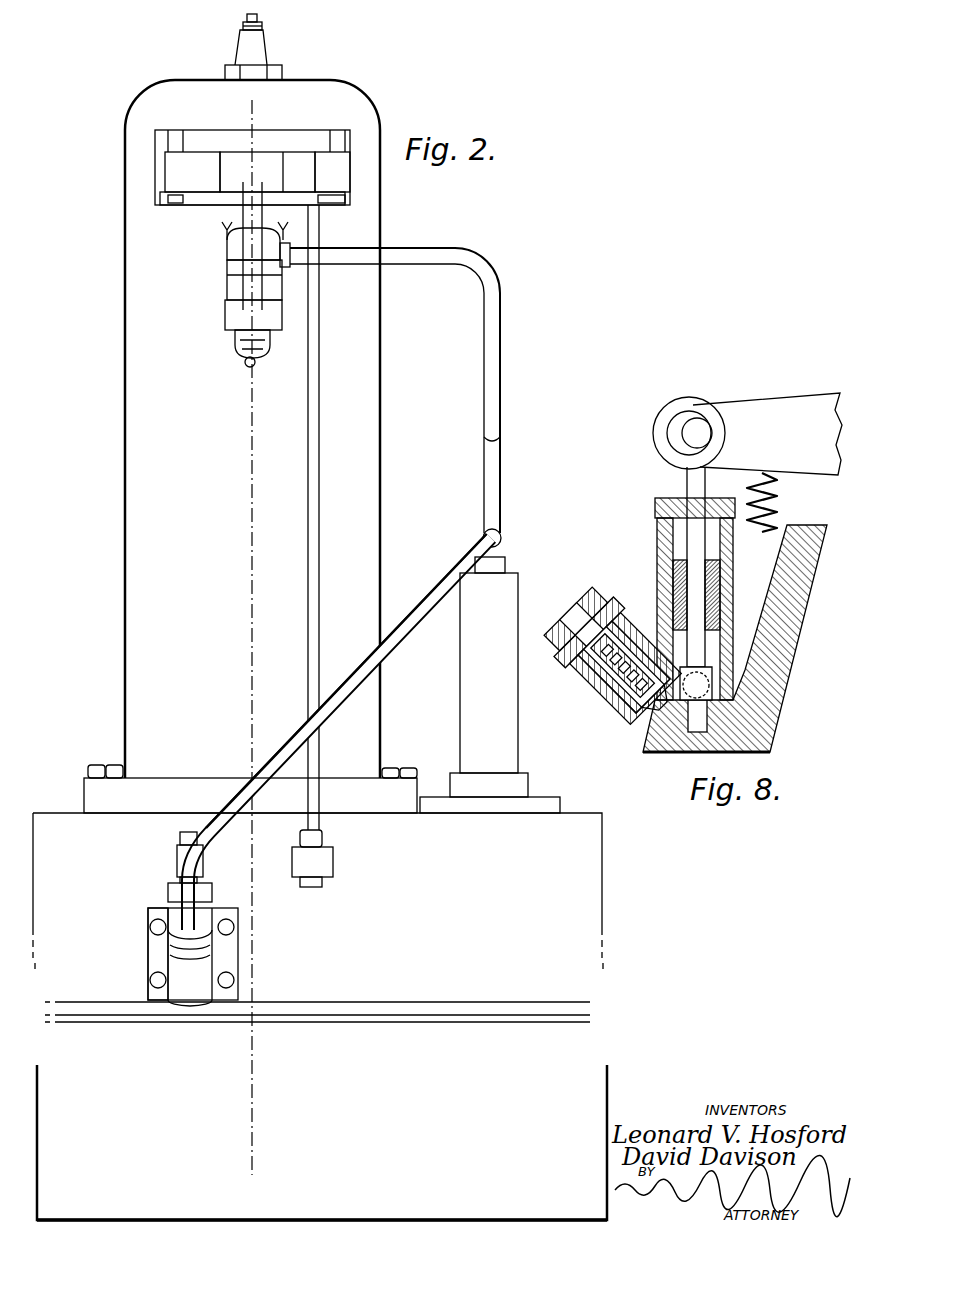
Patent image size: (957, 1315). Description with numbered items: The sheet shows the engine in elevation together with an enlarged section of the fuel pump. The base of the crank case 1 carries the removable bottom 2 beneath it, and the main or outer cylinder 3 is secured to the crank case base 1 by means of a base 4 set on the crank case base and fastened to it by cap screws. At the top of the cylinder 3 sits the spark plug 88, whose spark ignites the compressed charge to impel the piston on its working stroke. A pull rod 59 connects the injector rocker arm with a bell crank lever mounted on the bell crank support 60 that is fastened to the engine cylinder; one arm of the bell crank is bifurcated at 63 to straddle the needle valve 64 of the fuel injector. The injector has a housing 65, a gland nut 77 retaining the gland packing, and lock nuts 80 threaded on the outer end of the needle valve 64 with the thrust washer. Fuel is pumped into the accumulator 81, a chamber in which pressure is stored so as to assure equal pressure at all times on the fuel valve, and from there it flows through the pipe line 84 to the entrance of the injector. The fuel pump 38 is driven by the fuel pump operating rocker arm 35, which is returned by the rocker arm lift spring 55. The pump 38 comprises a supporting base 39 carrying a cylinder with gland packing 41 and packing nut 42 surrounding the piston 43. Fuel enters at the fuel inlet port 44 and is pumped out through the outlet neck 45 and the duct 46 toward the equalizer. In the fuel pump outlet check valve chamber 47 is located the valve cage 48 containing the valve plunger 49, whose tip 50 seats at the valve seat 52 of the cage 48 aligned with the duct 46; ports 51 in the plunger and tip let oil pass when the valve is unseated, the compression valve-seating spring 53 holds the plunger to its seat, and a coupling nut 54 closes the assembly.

In FIG. 2, the base of the crank case 1 is at (320, 1016).
In FIG. 2, the removable bottom 2 is at (294, 1131).
In FIG. 2, the main or outer cylinder 3 is at (252, 643).
In FIG. 2, the base 4 is at (222, 773).
In FIG. 2, the fuel pump operating rocker arm 35 is at (177, 855).
In FIG. 8, the fuel pump operating rocker arm 35 is at (747, 434).
In FIG. 8, the fuel pump 38 is at (665, 745).
In FIG. 2, the supporting base 39 is at (238, 915).
In FIG. 8, the supporting base 39 is at (800, 635).
In FIG. 8, the gland packing 41 is at (673, 580).
In FIG. 2, the packing nut 42 is at (168, 892).
In FIG. 8, the packing nut 42 is at (655, 500).
In FIG. 8, the piston 43 is at (687, 470).
In FIG. 8, the fuel inlet port 44 is at (715, 672).
In FIG. 2, the outlet neck 45 is at (212, 965).
In FIG. 8, the outlet neck 45 is at (635, 690).
In FIG. 8, the duct 46 is at (750, 752).
In FIG. 8, the fuel pump outlet check valve chamber 47 is at (650, 735).
In FIG. 8, the valve cage 48 is at (630, 720).
In FIG. 8, the valve plunger 49 is at (620, 680).
In FIG. 8, the tip 50 is at (700, 752).
In FIG. 8, the ports 51 is at (650, 630).
In FIG. 8, the valve seat 52 is at (720, 703).
In FIG. 8, the compression valve-seating spring 53 is at (600, 660).
In FIG. 2, the coupling nut 54 is at (148, 944).
In FIG. 8, the coupling nut 54 is at (575, 605).
In FIG. 8, the rocker arm lift spring 55 is at (777, 503).
In FIG. 2, the pull rod 59 is at (305, 578).
In FIG. 2, the bell crank support 60 is at (183, 130).
In FIG. 2, the bifurcated arm 63 is at (227, 282).
In FIG. 2, the needle valve 64 is at (246, 364).
In FIG. 2, the housing 65 is at (235, 262).
In FIG. 2, the gland nut 77 is at (225, 314).
In FIG. 2, the lock nuts 80 is at (235, 346).
In FIG. 2, the accumulator 81 is at (490, 685).
In FIG. 2, the pipe line 84 is at (336, 270).
In FIG. 2, the spark plug 88 is at (266, 42).